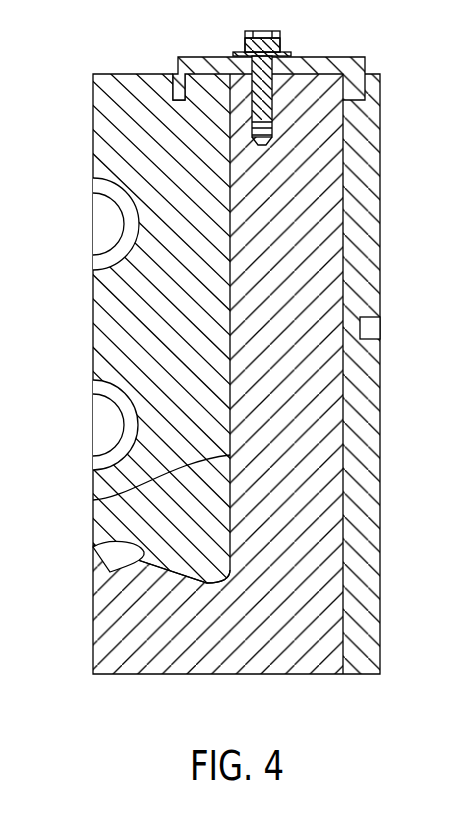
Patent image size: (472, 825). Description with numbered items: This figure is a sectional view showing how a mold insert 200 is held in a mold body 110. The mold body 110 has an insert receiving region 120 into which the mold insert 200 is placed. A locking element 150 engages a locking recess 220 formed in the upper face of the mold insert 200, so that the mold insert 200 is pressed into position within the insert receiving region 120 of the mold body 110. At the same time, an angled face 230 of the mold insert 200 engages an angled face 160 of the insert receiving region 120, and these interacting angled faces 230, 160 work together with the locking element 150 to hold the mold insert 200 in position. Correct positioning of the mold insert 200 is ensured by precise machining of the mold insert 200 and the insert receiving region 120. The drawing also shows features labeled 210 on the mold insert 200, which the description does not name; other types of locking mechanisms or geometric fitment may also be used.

The mold body 110 is at (182, 660).
The insert receiving region 120 is at (93, 500).
The locking element 150 is at (198, 65).
The angled face 160 is at (140, 543).
The mold insert 200 is at (112, 337).
The channel 210 is at (104, 213).
The locking recess 220 is at (177, 74).
The angled face 230 is at (133, 557).